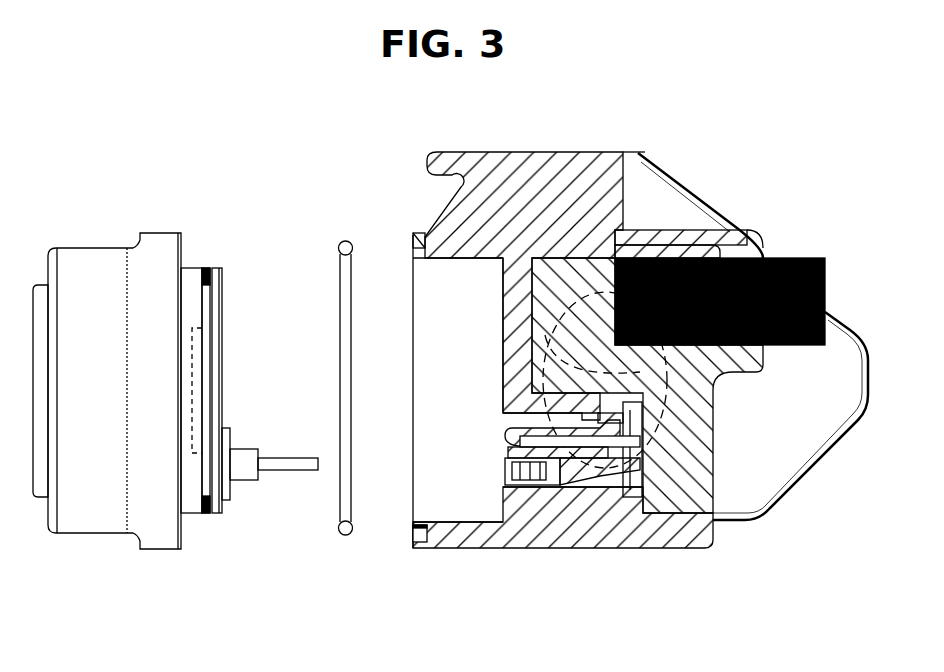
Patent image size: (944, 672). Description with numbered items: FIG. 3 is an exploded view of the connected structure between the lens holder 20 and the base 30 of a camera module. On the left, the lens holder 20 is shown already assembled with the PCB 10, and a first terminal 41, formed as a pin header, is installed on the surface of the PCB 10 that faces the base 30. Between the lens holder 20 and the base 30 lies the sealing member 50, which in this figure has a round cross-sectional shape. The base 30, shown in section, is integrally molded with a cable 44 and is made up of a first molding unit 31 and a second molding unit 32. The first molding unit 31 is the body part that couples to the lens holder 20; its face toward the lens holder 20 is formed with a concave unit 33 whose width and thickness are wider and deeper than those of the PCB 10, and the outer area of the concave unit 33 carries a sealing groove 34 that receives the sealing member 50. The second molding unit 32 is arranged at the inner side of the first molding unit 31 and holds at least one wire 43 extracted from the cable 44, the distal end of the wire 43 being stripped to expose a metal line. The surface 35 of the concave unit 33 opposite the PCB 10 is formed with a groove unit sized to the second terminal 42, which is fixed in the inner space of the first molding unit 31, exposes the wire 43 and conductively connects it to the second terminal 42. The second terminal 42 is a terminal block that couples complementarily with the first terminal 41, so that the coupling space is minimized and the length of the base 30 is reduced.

The PCB 10 is at (210, 270).
The lens holder 20 is at (88, 273).
The base 30 is at (850, 492).
The first molding unit 31 is at (740, 500).
The second molding unit 32 is at (690, 448).
The concave unit 33 is at (446, 388).
The sealing groove 34 is at (423, 233).
The surface 35 is at (502, 313).
The first terminal 41 is at (275, 465).
The second terminal 42 is at (552, 463).
The wire 43 is at (633, 462).
The cable 44 is at (782, 257).
The sealing member 50 is at (339, 245).